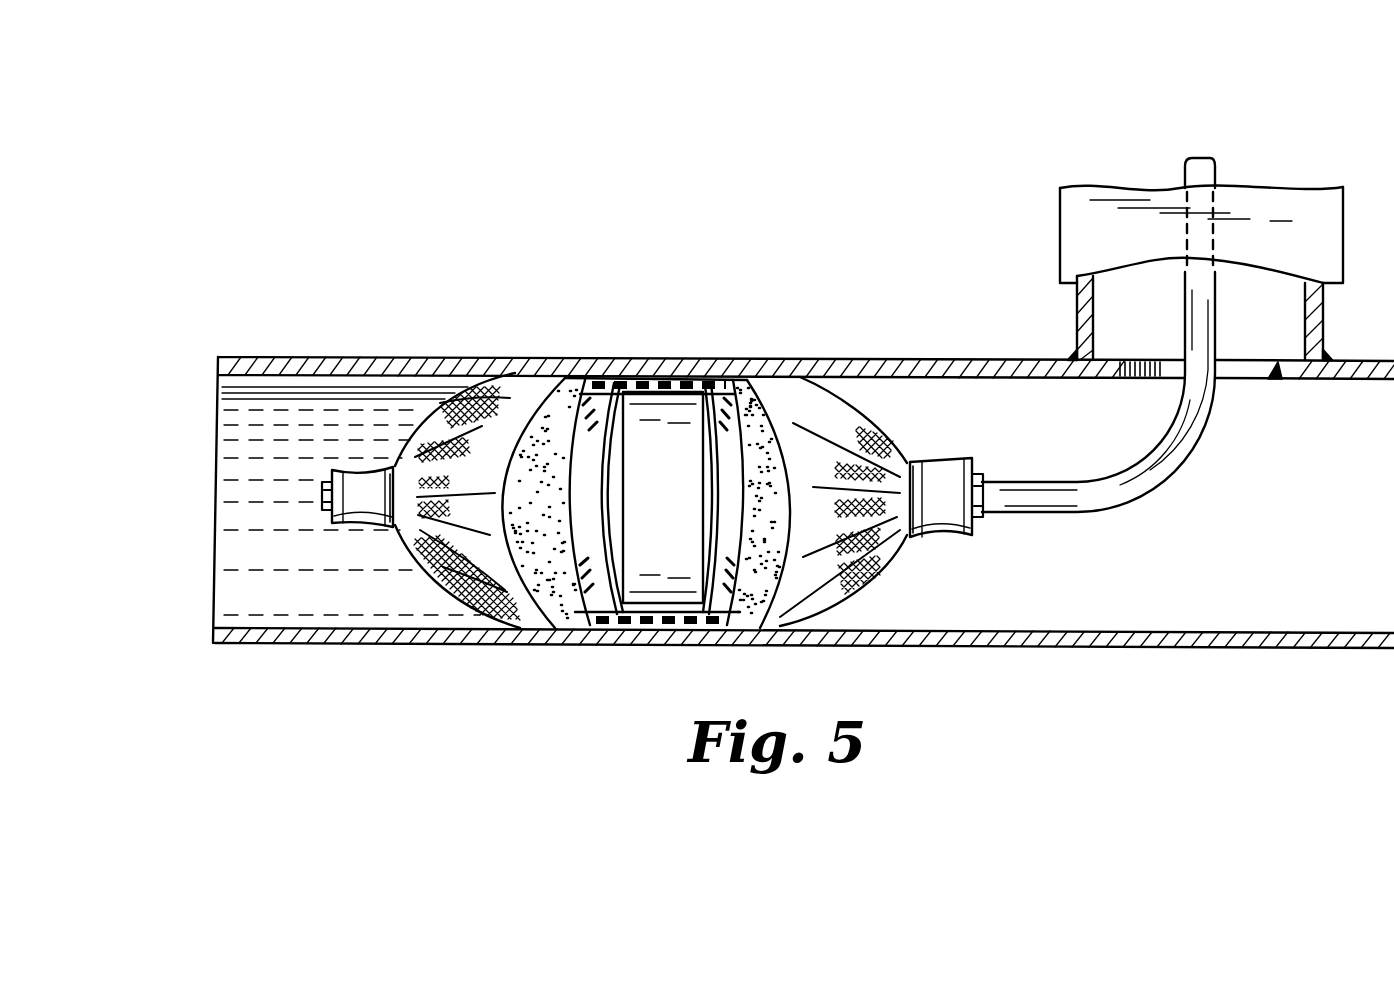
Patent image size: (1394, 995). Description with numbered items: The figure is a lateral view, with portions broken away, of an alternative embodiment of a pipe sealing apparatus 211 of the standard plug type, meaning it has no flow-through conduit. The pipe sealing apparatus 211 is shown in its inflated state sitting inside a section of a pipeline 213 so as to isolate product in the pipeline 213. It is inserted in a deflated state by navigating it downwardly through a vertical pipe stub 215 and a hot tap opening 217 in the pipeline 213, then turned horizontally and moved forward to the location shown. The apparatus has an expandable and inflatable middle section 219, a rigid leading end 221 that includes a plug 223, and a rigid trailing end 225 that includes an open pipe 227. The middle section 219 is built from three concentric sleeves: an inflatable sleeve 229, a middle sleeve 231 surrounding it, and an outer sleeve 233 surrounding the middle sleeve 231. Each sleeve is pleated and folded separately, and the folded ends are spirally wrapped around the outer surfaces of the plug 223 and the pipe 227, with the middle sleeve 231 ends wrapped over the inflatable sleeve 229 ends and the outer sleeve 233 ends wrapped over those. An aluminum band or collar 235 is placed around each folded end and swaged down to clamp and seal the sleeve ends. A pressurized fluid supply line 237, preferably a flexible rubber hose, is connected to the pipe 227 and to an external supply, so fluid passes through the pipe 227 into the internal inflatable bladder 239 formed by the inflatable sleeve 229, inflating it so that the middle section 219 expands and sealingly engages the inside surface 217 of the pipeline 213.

The pipe sealing apparatus 211 is at (1222, 528).
The pipeline 213 is at (1122, 637).
The vertical pipe stub 215 is at (1078, 298).
The hot tap opening 217 is at (919, 377).
The middle section 219 is at (591, 653).
The rigid leading end 221 is at (356, 526).
The plug 223 is at (328, 488).
The rigid trailing end 225 is at (945, 541).
The open pipe 227 is at (985, 480).
The inflatable sleeve 229 is at (608, 385).
The middle sleeve 231 is at (572, 388).
The outer sleeve 233 is at (480, 385).
The aluminum band or collar 235 is at (352, 496).
The pressurized fluid supply line 237 is at (1203, 158).
The internal inflatable bladder 239 is at (694, 508).